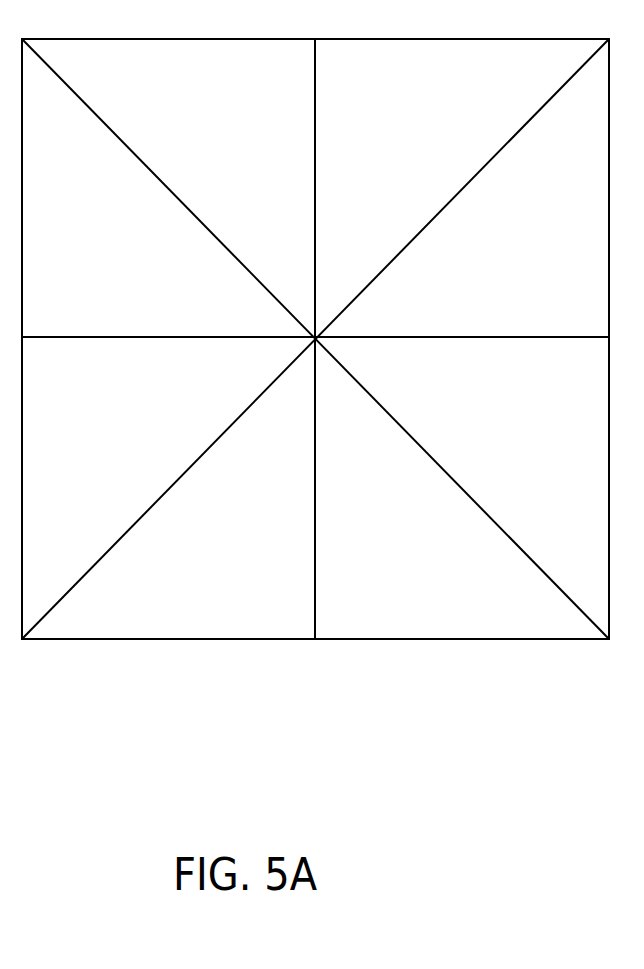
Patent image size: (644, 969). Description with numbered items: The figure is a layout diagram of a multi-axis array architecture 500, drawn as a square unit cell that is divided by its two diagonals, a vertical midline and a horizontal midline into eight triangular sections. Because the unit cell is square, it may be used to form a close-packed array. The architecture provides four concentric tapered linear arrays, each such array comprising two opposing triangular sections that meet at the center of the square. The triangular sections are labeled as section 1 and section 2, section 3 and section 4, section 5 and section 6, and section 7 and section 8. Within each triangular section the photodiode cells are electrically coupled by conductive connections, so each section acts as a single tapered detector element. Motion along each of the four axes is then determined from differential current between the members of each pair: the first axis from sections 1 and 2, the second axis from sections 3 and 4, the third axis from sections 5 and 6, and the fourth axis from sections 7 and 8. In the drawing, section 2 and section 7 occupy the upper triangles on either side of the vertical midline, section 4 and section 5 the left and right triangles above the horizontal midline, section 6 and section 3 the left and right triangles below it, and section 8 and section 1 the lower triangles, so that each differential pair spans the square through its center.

The square search/pattern region divided into eight triangular sectors 500 is at (570, 890).
The triangular section 1 is at (462, 488).
The triangular section 2 is at (168, 188).
The triangular section 3 is at (462, 488).
The triangular section 4 is at (168, 188).
The triangular section 5 is at (462, 188).
The triangular section 6 is at (168, 488).
The triangular section 7 is at (462, 188).
The triangular section 8 is at (168, 488).